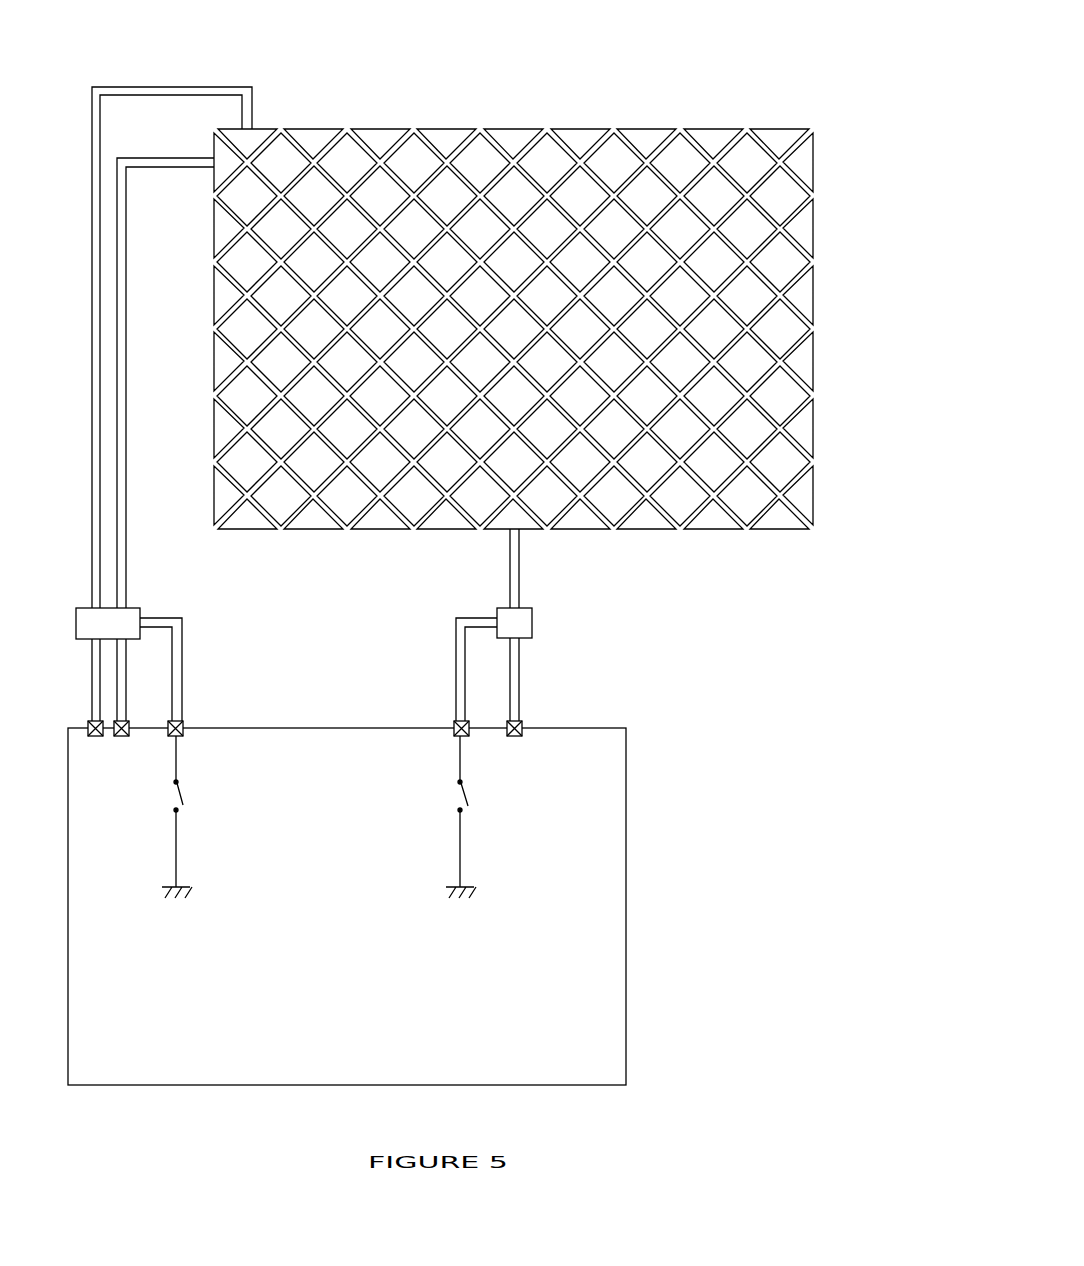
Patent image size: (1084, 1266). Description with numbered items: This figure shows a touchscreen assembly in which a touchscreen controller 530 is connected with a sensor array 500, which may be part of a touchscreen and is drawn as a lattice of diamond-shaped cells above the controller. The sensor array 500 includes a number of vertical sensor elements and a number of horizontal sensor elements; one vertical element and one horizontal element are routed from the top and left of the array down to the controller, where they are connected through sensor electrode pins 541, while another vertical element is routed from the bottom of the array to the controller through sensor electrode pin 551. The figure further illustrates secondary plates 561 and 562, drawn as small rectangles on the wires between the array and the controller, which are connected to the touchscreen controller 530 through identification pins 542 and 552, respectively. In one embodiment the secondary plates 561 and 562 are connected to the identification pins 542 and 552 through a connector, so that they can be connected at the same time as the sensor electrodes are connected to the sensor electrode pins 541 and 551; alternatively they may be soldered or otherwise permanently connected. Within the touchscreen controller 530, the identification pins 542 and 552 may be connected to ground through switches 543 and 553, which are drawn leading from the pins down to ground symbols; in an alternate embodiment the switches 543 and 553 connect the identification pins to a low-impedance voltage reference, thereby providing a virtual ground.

The sensor array 500 is at (782, 92).
The secondary plate 561 is at (143, 605).
The secondary plate 562 is at (535, 605).
The touchscreen controller 530 is at (361, 1081).
The sensor electrode pins 541 is at (100, 757).
The identification pin 542 is at (187, 718).
The switch 543 is at (205, 817).
The sensor electrode pin 551 is at (521, 747).
The identification pin 552 is at (445, 744).
The switch 553 is at (435, 817).